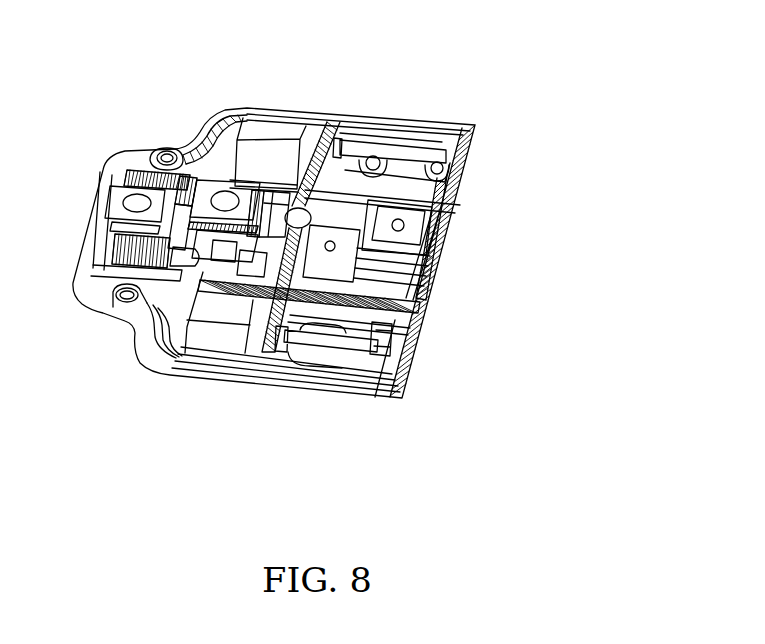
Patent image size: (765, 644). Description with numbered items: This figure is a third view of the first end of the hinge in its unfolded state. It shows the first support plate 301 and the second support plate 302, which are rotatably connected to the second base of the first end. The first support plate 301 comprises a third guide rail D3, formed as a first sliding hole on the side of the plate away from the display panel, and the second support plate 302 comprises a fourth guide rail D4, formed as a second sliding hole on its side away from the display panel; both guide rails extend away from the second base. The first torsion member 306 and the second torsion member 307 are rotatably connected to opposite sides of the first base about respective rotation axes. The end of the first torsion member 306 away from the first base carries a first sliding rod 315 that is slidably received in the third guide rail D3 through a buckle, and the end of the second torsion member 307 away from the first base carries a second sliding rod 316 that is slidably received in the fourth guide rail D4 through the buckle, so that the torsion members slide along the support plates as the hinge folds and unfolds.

The first support plate 301 is at (403, 406).
The second support plate 302 is at (480, 131).
The first torsion member 306 is at (178, 357).
The second torsion member 307 is at (243, 108).
The first sliding rod 315 is at (357, 367).
The second sliding rod 316 is at (424, 134).
The third guide rail D3 is at (274, 352).
The fourth guide rail D4 is at (333, 128).